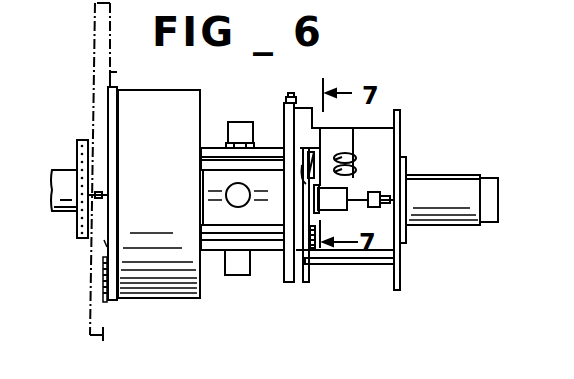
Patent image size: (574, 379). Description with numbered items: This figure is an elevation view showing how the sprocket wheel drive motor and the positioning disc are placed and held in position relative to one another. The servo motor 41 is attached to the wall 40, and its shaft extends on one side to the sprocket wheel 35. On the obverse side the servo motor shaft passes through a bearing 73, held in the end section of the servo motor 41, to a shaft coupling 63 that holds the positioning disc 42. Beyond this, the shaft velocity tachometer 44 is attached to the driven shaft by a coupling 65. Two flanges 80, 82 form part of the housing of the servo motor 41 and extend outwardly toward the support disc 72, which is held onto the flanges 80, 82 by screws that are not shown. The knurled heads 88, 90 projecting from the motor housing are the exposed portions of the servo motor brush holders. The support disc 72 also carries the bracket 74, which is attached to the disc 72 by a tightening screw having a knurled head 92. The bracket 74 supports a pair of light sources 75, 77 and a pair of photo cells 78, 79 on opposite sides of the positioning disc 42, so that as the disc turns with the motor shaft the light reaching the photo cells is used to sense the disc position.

The sprocket wheel 35 is at (82, 242).
The wall 40 is at (92, 62).
The servo motor 41 is at (168, 89).
The positioning disc 42 is at (312, 248).
The shaft velocity tachometer 44 is at (465, 178).
The shaft coupling 63 is at (332, 210).
The coupling 65 is at (379, 191).
The support disc 72 is at (283, 128).
The bearing 73 is at (278, 210).
The bracket 74 is at (350, 132).
The light source 75 is at (342, 157).
The light source 77 is at (342, 169).
The photo cell 78 is at (310, 162).
The photo cell 79 is at (300, 190).
The flange 80 is at (212, 148).
The flange 82 is at (212, 250).
The knurled head 88 is at (243, 123).
The knurled head 90 is at (237, 267).
The knurled head 92 is at (293, 95).